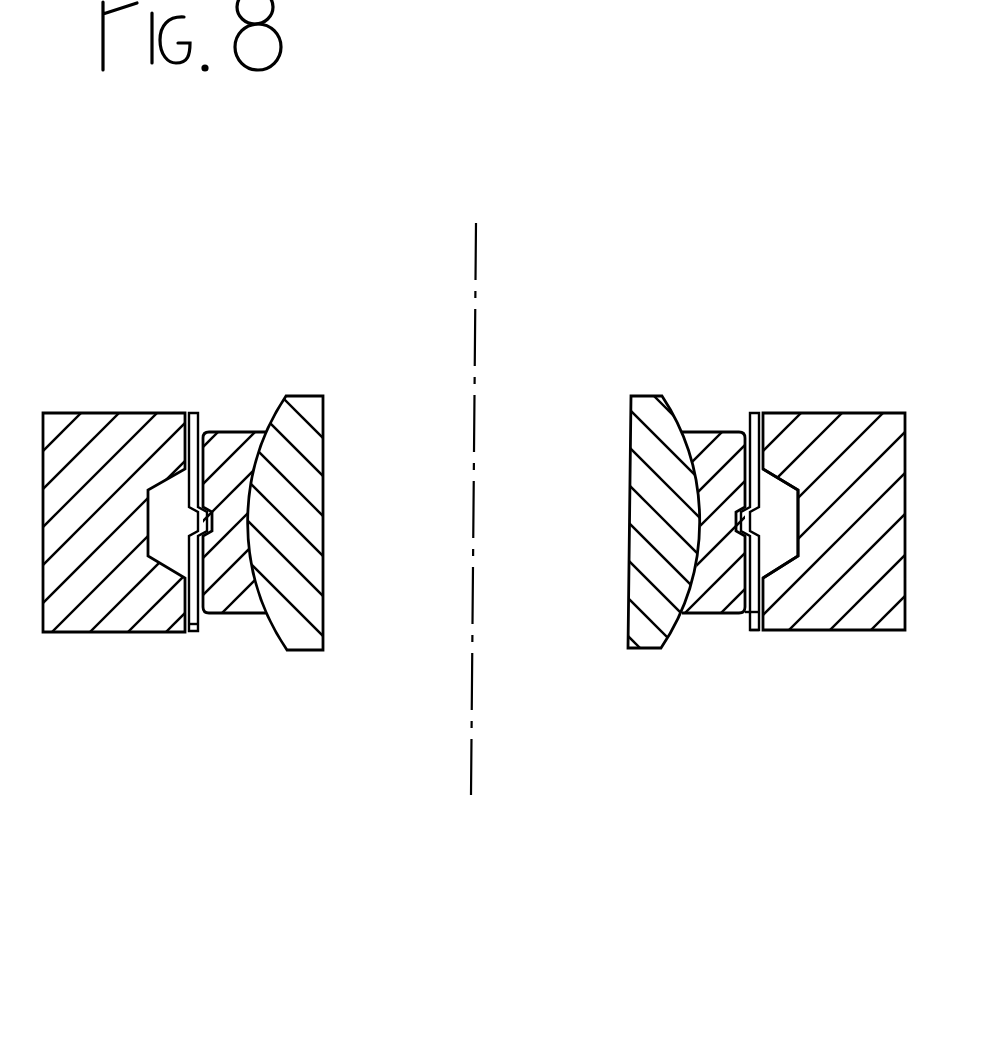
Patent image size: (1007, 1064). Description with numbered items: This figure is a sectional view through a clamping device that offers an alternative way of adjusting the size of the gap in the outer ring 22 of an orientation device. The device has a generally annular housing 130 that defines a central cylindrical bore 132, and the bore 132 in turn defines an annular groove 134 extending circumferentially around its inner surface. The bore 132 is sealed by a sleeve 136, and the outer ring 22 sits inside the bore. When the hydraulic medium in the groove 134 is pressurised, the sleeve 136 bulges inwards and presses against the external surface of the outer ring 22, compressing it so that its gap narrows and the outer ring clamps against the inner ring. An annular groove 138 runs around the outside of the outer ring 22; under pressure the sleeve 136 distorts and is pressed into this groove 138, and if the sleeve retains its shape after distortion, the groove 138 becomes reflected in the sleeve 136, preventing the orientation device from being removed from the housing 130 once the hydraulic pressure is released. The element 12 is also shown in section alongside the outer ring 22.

The spherical member 12 is at (656, 413).
The outer ring 22 is at (712, 432).
The housing 130 is at (860, 423).
The central cylindrical bore 132 is at (748, 613).
The annular groove 134 is at (773, 537).
The sleeve 136 is at (753, 615).
The annular groove 138 is at (212, 505).